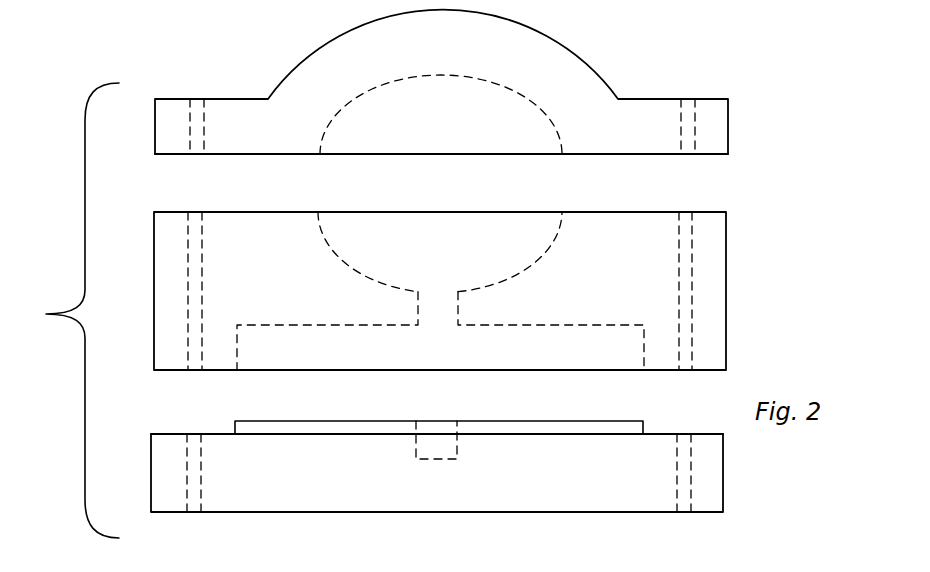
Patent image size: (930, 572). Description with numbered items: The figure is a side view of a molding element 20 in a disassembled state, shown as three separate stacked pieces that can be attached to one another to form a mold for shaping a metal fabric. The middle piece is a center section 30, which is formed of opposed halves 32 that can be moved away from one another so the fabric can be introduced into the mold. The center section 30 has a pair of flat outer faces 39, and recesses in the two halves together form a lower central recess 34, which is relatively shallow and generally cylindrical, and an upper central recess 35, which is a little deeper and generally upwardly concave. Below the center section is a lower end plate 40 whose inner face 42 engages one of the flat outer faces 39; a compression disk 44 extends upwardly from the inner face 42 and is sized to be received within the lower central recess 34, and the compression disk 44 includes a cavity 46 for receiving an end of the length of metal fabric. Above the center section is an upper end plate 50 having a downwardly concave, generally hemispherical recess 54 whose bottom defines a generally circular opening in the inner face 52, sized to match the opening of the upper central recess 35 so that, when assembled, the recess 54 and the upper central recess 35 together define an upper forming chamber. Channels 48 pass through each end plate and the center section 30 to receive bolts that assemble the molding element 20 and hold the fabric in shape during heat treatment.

The molding element 20 is at (62, 310).
The center section 30 is at (733, 253).
The opposed halves 32 is at (167, 279).
The lower central recess 34 is at (363, 325).
The upper central recess 35 is at (537, 262).
The flat outer faces 39 is at (253, 212).
The lower end plate 40 is at (725, 470).
The inner face of lower end plate 42 is at (663, 434).
The compression disk 44 is at (623, 428).
The cavity 46 is at (435, 459).
The channels 48 is at (190, 117).
The upper end plate 50 is at (555, 68).
The inner face of upper end plate 52 is at (662, 154).
The recess 54 is at (370, 90).